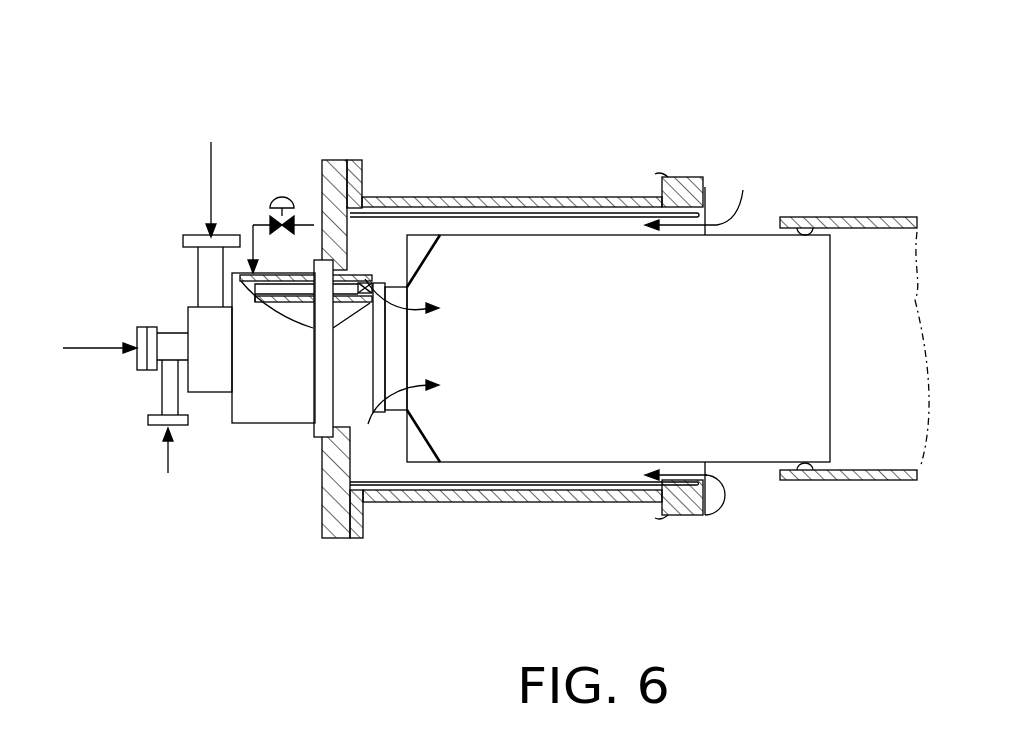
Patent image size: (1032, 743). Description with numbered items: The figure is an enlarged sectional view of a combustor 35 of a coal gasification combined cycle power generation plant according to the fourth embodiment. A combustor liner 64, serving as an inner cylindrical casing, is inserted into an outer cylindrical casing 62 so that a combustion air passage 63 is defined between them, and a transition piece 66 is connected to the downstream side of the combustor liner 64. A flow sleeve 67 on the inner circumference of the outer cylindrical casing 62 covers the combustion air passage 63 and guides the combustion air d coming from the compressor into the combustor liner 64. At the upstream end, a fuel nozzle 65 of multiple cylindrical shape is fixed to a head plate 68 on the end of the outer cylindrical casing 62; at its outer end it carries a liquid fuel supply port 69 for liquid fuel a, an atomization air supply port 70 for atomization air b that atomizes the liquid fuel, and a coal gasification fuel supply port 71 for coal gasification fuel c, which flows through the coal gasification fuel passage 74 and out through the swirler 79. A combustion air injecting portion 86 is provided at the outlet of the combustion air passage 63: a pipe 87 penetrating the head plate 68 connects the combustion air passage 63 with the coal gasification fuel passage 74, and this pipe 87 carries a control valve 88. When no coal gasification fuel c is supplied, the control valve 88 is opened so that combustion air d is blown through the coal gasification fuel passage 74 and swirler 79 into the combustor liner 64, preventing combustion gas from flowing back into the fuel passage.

The combustor 35 is at (652, 154).
The outer cylindrical casing 62 is at (480, 197).
The combustion air passage 63 is at (593, 228).
The combustor liner 64 is at (747, 234).
The fuel nozzle 65 is at (272, 434).
The transition piece 66 is at (890, 482).
The flow sleeve 67 is at (532, 212).
The head plate 68 is at (330, 158).
The liquid fuel supply port 69 is at (135, 363).
The atomization air supply port 70 is at (150, 422).
The coal gasification fuel supply port 71 is at (195, 270).
The coal gasification fuel passage 74 is at (288, 287).
The swirler 79 is at (349, 277).
The combustion air injecting portion 86 is at (245, 221).
The pipe 87 is at (317, 260).
The control valve 88 is at (273, 198).
The liquid fuel a is at (90, 346).
The atomization air b is at (168, 460).
The coal gasification fuel c is at (210, 168).
The combustion air d is at (257, 248).